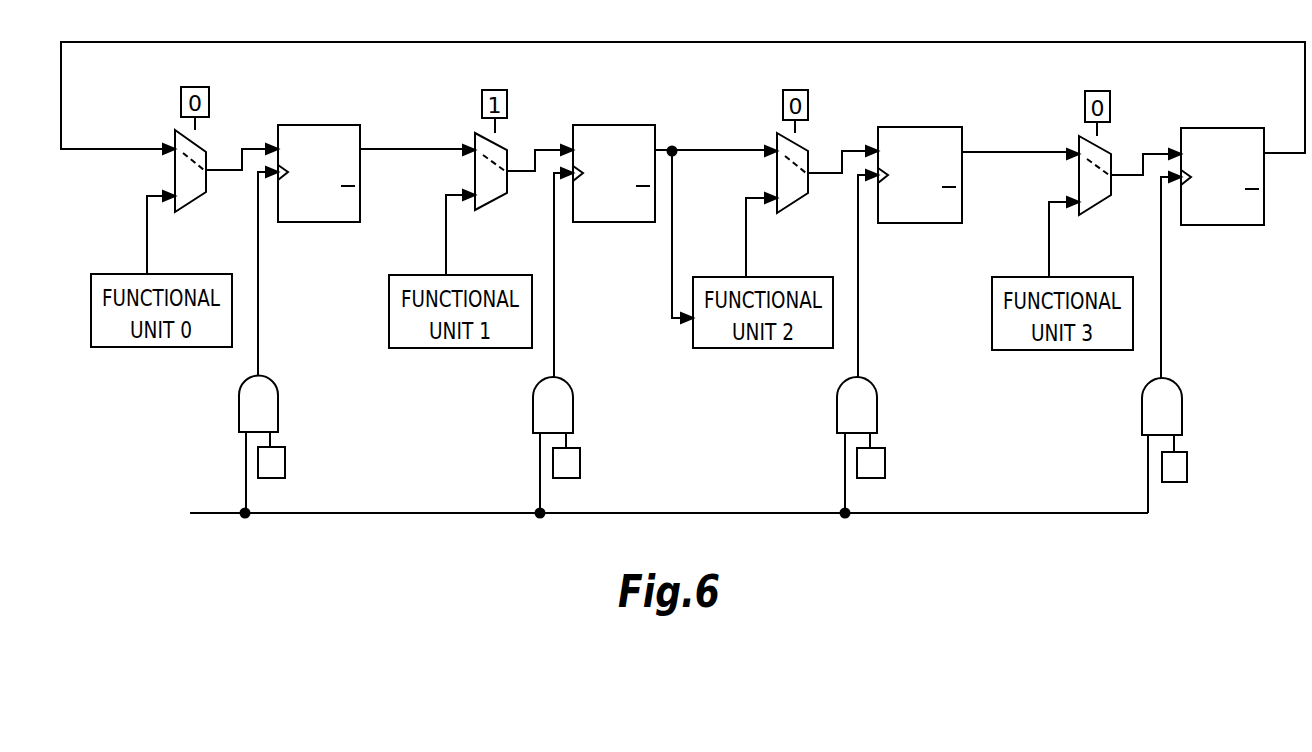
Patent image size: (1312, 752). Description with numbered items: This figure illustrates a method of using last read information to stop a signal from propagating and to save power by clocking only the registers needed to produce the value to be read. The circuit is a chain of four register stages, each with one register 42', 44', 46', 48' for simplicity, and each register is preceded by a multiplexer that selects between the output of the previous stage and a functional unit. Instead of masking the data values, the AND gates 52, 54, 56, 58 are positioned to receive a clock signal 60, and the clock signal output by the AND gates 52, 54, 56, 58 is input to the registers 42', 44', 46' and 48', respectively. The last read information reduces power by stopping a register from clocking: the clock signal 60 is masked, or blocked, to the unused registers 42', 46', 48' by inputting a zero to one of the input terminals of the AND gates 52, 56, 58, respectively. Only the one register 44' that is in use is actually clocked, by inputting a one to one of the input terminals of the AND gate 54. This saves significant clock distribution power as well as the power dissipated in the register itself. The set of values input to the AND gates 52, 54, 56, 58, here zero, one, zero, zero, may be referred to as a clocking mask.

The register 42' is at (319, 211).
The register 44' is at (614, 210).
The register 46' is at (920, 212).
The register 48' is at (1222, 213).
The AND gate 52 is at (278, 405).
The AND gate 54 is at (573, 406).
The AND gate 56 is at (877, 406).
The AND gate 58 is at (1182, 408).
The clock signal 60 is at (180, 527).